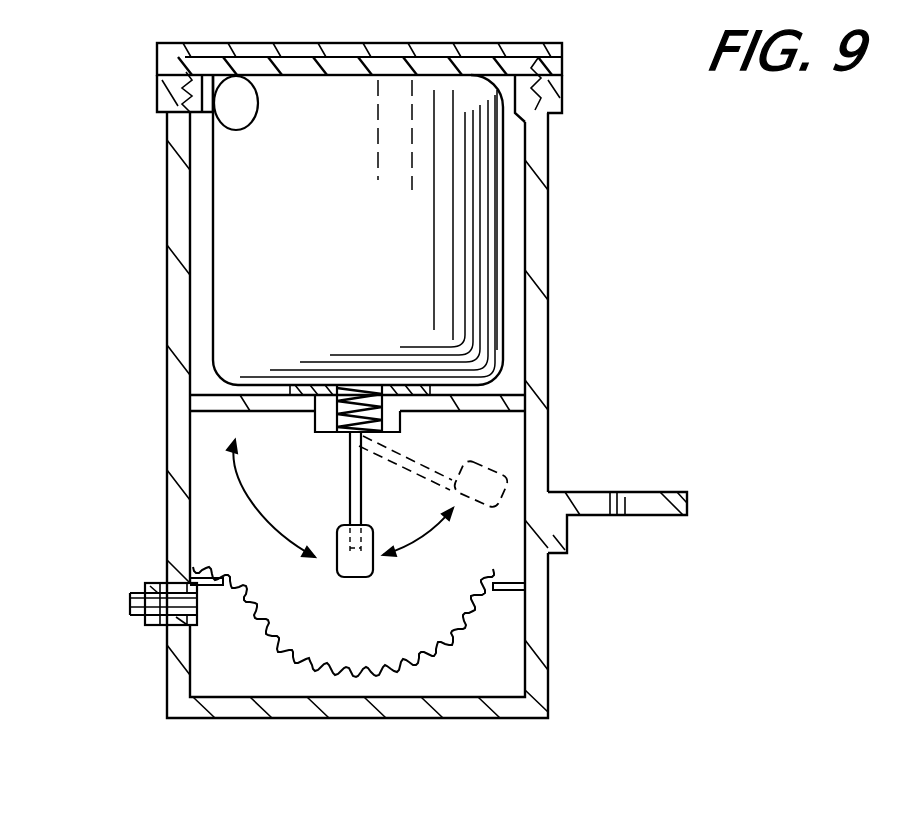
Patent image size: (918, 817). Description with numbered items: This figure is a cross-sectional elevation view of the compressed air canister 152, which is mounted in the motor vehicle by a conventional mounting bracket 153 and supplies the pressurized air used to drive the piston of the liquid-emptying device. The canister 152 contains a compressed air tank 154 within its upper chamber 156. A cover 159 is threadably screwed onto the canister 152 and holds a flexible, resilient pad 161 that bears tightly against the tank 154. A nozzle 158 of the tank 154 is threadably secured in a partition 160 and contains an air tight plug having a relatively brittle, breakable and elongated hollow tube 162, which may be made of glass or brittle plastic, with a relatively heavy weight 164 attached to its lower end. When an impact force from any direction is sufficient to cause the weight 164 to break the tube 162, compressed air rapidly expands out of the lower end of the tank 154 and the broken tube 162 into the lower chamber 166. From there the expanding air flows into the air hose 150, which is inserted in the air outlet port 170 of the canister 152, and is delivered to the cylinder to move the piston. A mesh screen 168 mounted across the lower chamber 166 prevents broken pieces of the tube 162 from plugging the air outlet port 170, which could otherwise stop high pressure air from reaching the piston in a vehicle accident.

The air hose 150 is at (130, 603).
The compressed air canister 152 is at (549, 270).
The mounting bracket 153 is at (690, 505).
The compressed air tank 154 is at (505, 192).
The upper chamber 156 is at (512, 305).
The nozzle 158 is at (402, 425).
The cover 159 is at (157, 54).
The partition 160 is at (192, 411).
The flexible, resilient pad 161 is at (226, 129).
The hollow tube 162 is at (348, 491).
The weight 164 is at (352, 568).
The lower chamber 166 is at (242, 678).
The mesh screen 168 is at (405, 668).
The air outlet port 170 is at (155, 625).